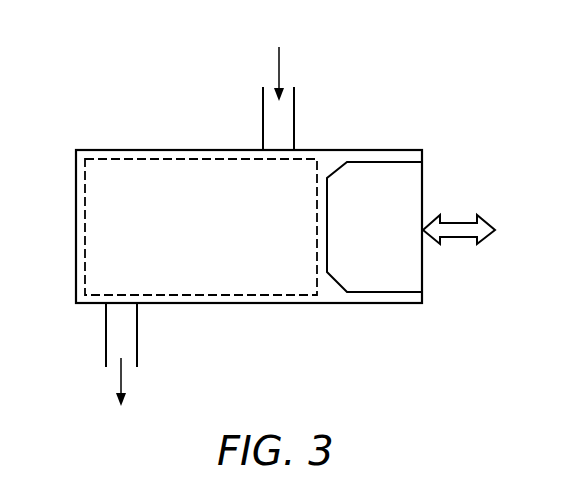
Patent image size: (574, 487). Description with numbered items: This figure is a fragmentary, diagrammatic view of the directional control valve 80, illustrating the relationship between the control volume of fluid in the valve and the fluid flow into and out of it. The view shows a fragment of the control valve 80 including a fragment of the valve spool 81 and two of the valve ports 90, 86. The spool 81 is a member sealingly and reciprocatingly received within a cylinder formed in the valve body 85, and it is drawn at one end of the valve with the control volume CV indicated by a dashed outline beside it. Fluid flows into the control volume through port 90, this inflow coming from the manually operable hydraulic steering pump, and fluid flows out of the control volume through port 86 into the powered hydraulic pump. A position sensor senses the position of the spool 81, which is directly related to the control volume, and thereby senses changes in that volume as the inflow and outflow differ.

The directional control valve 80 is at (160, 150).
The valve spool 81 is at (377, 247).
The valve body 85 is at (268, 303).
The valve port 86 is at (120, 303).
The valve port 90 is at (280, 150).